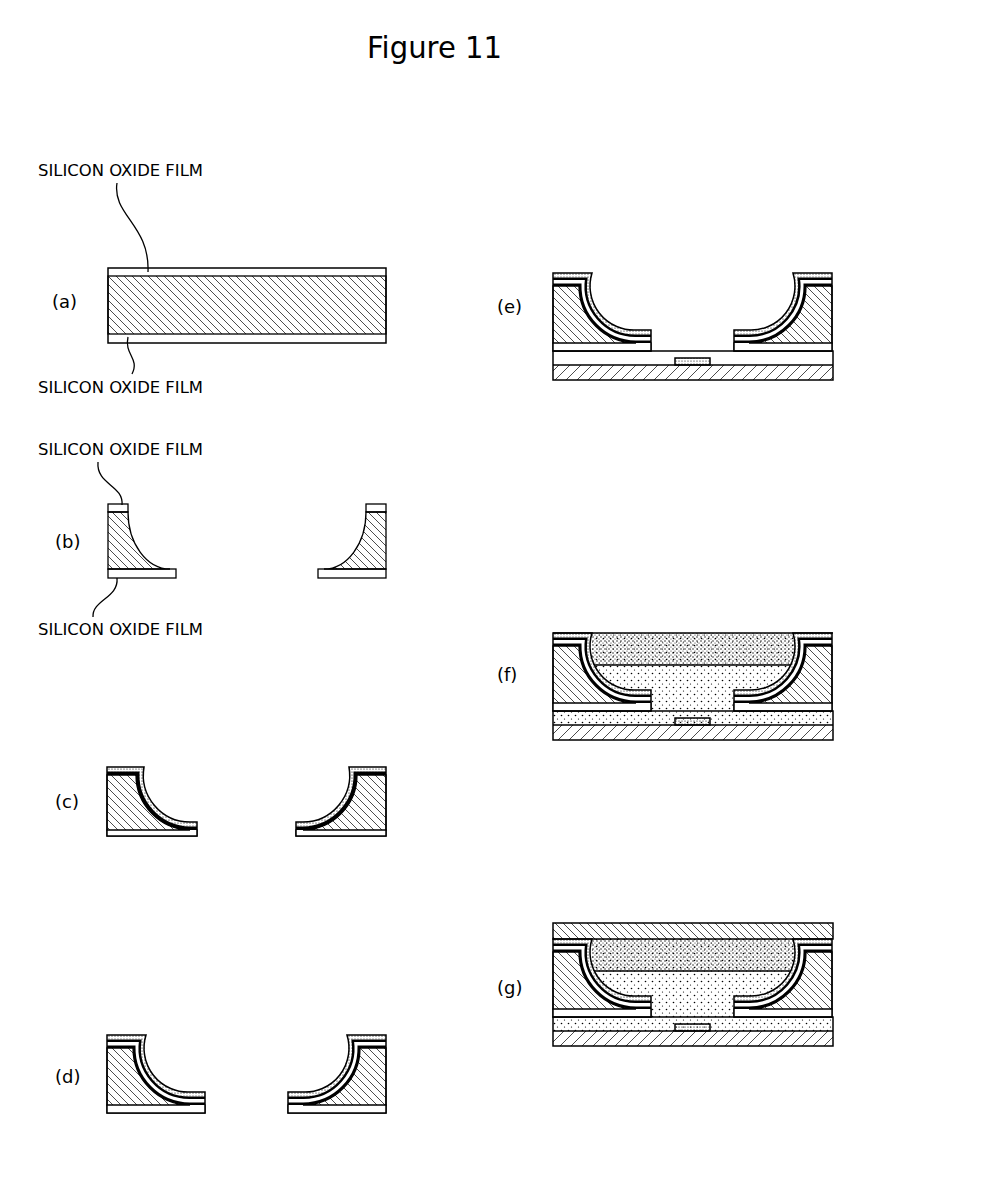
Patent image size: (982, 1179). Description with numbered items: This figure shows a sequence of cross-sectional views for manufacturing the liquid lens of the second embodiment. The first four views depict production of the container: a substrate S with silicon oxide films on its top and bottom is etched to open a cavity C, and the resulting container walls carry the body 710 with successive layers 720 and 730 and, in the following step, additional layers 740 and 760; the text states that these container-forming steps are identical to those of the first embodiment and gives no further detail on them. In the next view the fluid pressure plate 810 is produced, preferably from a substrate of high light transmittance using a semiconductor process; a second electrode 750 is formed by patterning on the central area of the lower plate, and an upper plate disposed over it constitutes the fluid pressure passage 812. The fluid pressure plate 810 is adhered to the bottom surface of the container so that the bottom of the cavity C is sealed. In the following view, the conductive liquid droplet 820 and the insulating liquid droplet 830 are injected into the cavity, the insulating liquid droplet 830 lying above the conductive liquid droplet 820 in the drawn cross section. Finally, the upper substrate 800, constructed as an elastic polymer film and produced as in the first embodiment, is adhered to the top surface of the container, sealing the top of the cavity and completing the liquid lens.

The silicon substrate 710 is at (378, 808).
The insulating layer 720 is at (363, 784).
The metal layer 730 is at (371, 768).
The insulating layer 740 is at (370, 1033).
The second electrode 750 is at (688, 372).
The metal layer 760 is at (345, 1058).
The upper substrate 800 is at (740, 930).
The fluid pressure plate 810 is at (610, 372).
The fluid pressure passage 812 is at (772, 372).
The conductive liquid droplet 820 is at (690, 685).
The insulating liquid droplet 830 is at (762, 652).
The silicon substrate S is at (292, 292).
The cavity C is at (256, 543).